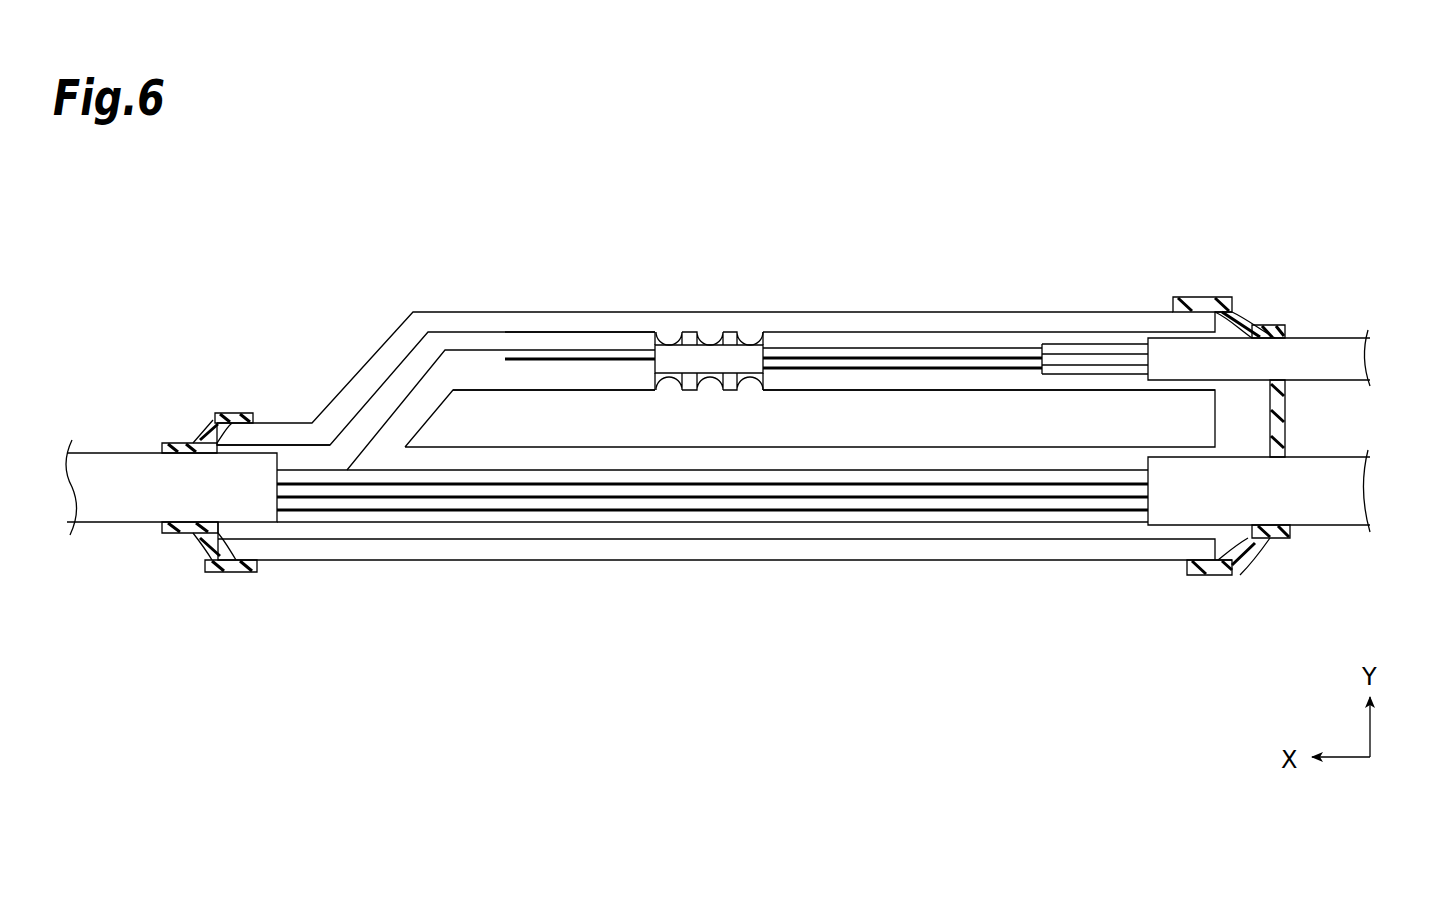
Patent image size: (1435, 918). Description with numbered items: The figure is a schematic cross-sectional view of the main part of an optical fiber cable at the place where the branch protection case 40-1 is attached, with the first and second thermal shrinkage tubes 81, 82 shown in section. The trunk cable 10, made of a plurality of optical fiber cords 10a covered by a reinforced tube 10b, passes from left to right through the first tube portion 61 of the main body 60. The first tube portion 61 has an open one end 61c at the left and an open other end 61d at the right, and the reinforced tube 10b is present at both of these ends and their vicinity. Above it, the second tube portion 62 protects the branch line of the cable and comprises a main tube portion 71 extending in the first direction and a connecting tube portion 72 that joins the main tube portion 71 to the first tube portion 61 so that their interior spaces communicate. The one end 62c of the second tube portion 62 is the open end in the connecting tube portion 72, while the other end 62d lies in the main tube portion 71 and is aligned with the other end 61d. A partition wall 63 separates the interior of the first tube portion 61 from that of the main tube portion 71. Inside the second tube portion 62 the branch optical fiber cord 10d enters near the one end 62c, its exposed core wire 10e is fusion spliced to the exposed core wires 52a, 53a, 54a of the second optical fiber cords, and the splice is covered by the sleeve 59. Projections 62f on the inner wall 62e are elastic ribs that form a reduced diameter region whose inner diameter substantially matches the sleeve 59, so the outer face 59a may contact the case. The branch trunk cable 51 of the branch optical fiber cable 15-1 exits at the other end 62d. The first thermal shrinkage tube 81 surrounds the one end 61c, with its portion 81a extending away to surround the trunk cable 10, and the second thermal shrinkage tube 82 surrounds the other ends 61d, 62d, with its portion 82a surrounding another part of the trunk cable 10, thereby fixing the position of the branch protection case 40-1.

The trunk cable 10 is at (118, 526).
The optical fiber cords 10a is at (572, 517).
The reinforced tube 10b is at (264, 505).
The branch optical fiber cord 10d is at (465, 350).
The core wire 10e is at (515, 357).
The branch optical fiber cable 15-1 is at (1287, 391).
The branch protection case 40-1 is at (432, 605).
The branch trunk cable 51 is at (1322, 338).
The core wire 52a is at (897, 347).
The core wire 53a is at (947, 358).
The core wire 54a is at (1007, 368).
The sleeve 59 is at (648, 340).
The outer face 59a is at (690, 342).
The main body 60 is at (1068, 310).
The first tube portion 61 is at (354, 551).
The one end 61c is at (205, 563).
The other end 61d is at (1213, 577).
The second tube portion 62 is at (428, 258).
The one end 62c is at (340, 443).
The other end 62d is at (1215, 300).
The inner wall 62e is at (593, 345).
The projections 62f is at (748, 398).
The partition wall 63 is at (847, 402).
The main tube portion 71 is at (450, 318).
The connecting tube portion 72 is at (370, 365).
The first thermal shrinkage tube 81 is at (209, 408).
The portion 81a is at (185, 443).
The second thermal shrinkage tube 82 is at (1243, 312).
The portion 82a is at (1262, 334).